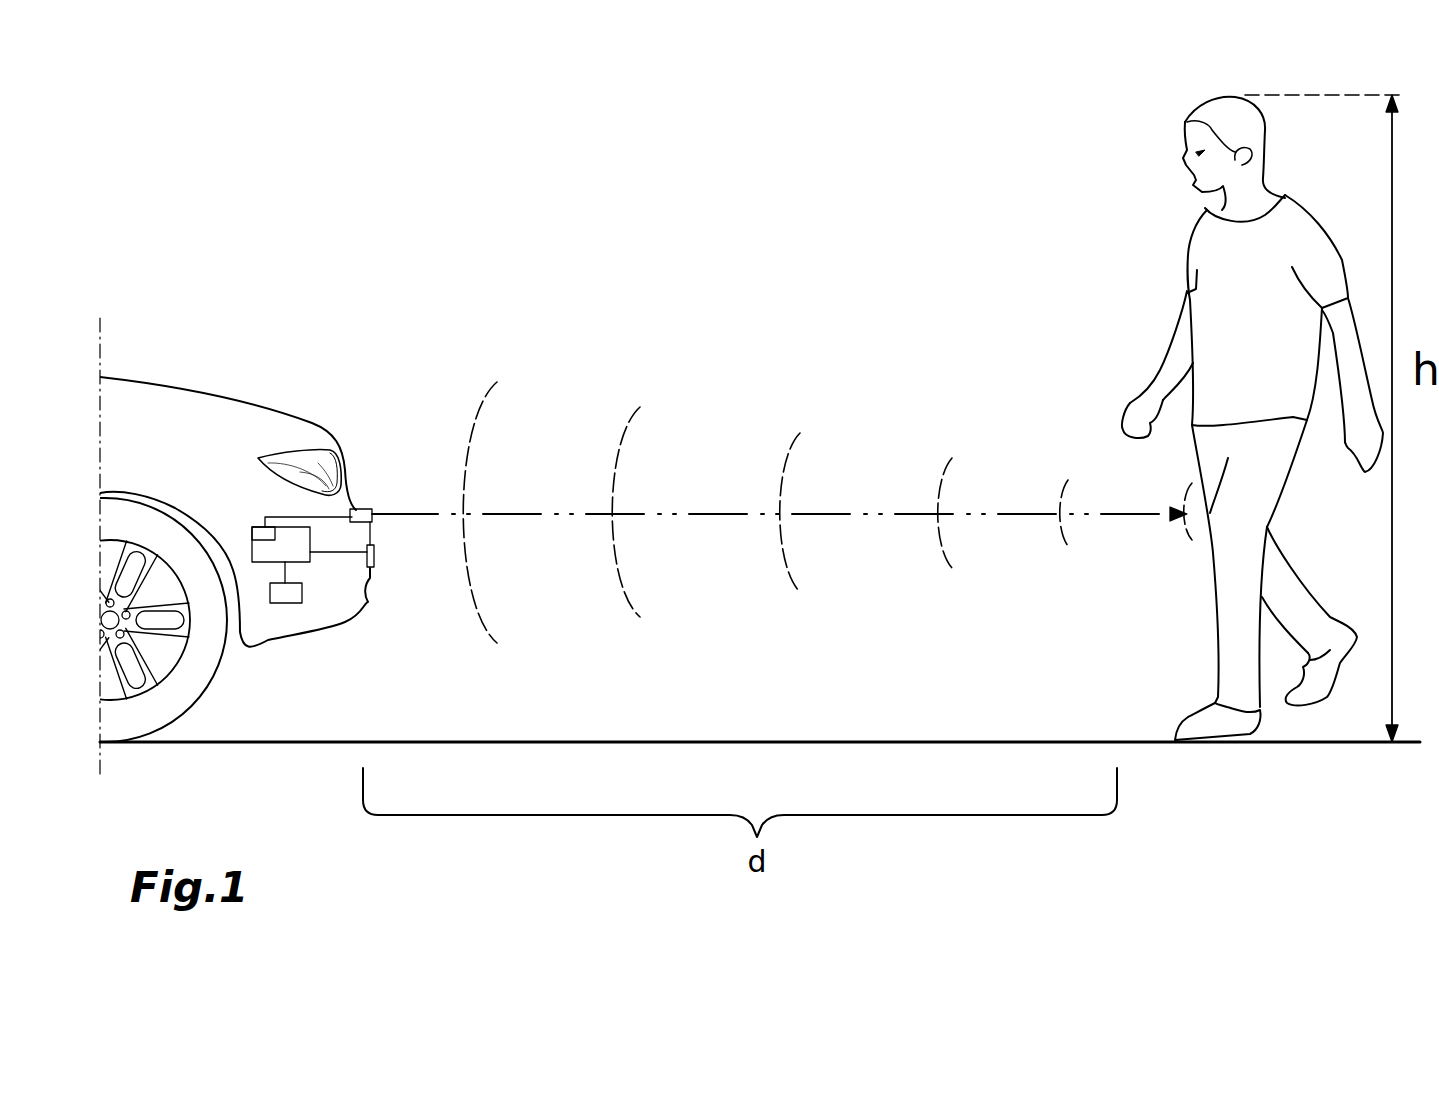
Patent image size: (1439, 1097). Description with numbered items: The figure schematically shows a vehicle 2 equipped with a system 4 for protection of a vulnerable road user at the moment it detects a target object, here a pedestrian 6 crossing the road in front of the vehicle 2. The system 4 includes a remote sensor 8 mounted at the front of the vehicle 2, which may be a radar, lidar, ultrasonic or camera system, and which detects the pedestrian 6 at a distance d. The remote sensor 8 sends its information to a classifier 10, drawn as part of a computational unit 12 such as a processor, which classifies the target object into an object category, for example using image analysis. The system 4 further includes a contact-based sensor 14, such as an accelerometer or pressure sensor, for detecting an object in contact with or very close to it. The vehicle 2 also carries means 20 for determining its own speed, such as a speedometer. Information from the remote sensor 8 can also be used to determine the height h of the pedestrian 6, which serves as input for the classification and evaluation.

The vehicle 2 is at (210, 523).
The system for protection of a vulnerable road user 4 is at (200, 496).
The pedestrian 6 is at (1105, 332).
The remote sensor 8 is at (357, 509).
The classifier 10 is at (258, 532).
The computational unit 12 is at (295, 549).
The contact-based sensor 14 is at (375, 556).
The means for determining the speed of the vehicle 20 is at (285, 598).